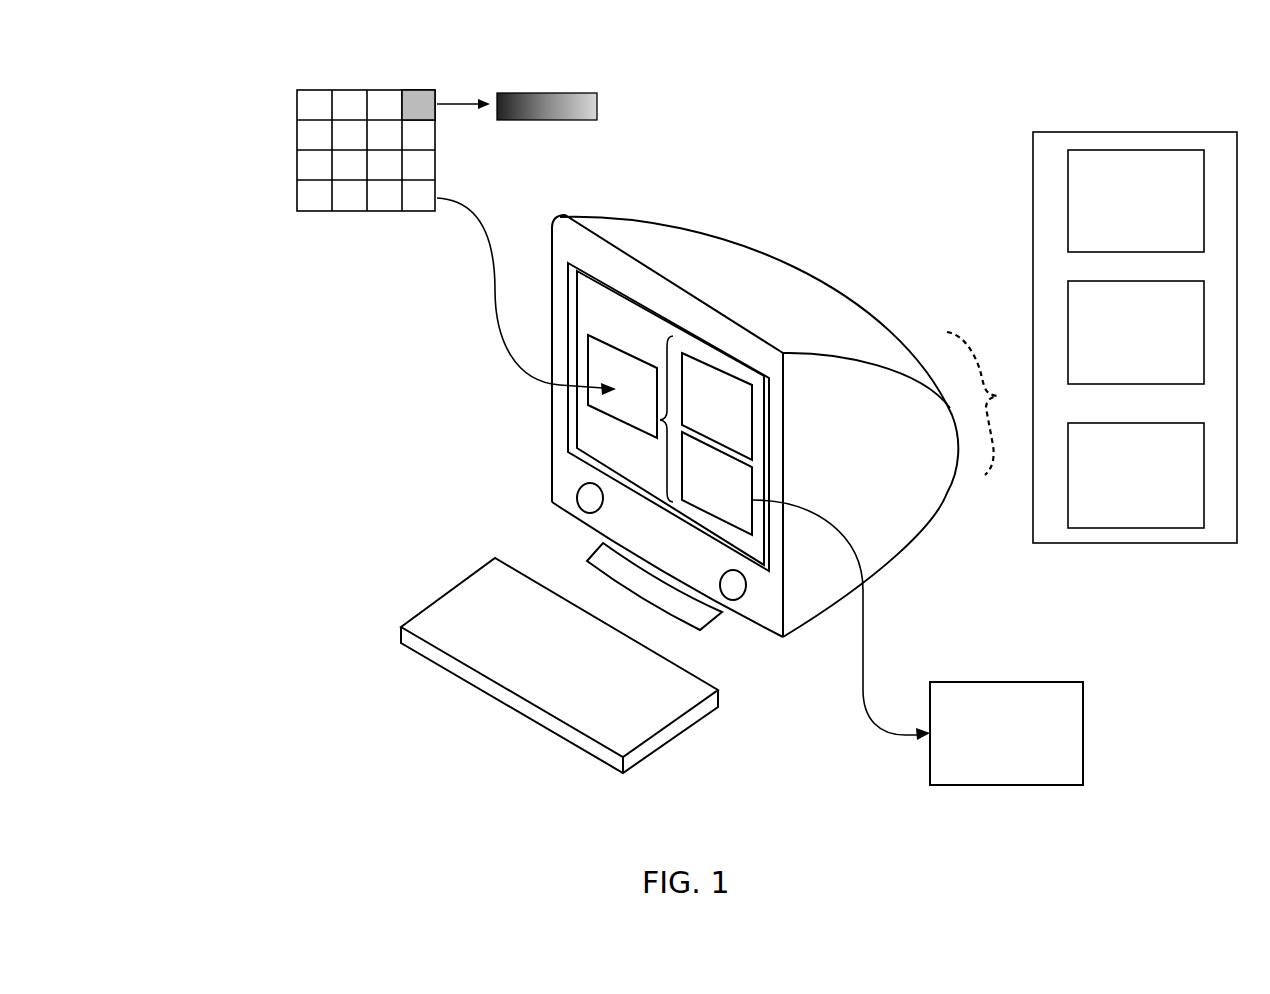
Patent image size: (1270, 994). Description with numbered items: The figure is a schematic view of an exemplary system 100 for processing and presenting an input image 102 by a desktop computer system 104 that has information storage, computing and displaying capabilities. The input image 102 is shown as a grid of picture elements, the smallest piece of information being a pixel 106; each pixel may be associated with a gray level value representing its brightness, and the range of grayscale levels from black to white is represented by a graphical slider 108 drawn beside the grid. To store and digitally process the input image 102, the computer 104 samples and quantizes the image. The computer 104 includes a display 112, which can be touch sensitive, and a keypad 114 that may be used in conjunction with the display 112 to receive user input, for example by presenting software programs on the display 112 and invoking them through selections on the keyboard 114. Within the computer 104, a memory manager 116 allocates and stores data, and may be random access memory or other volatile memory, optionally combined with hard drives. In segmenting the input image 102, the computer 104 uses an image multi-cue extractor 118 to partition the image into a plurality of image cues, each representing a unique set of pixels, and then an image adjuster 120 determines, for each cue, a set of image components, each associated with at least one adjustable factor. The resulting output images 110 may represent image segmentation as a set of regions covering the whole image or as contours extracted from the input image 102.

The system 100 is at (240, 439).
The input image 102 is at (456, 242).
The computer system 104 is at (755, 426).
The pixel 106 is at (415, 97).
The graphical slider 108 is at (553, 97).
The output images 110 is at (1048, 682).
The display 112 is at (569, 449).
The keypad 114 is at (428, 624).
The memory manager 116 is at (1136, 201).
The image multi-cue extractor 118 is at (1136, 332).
The image adjuster 120 is at (1136, 475).